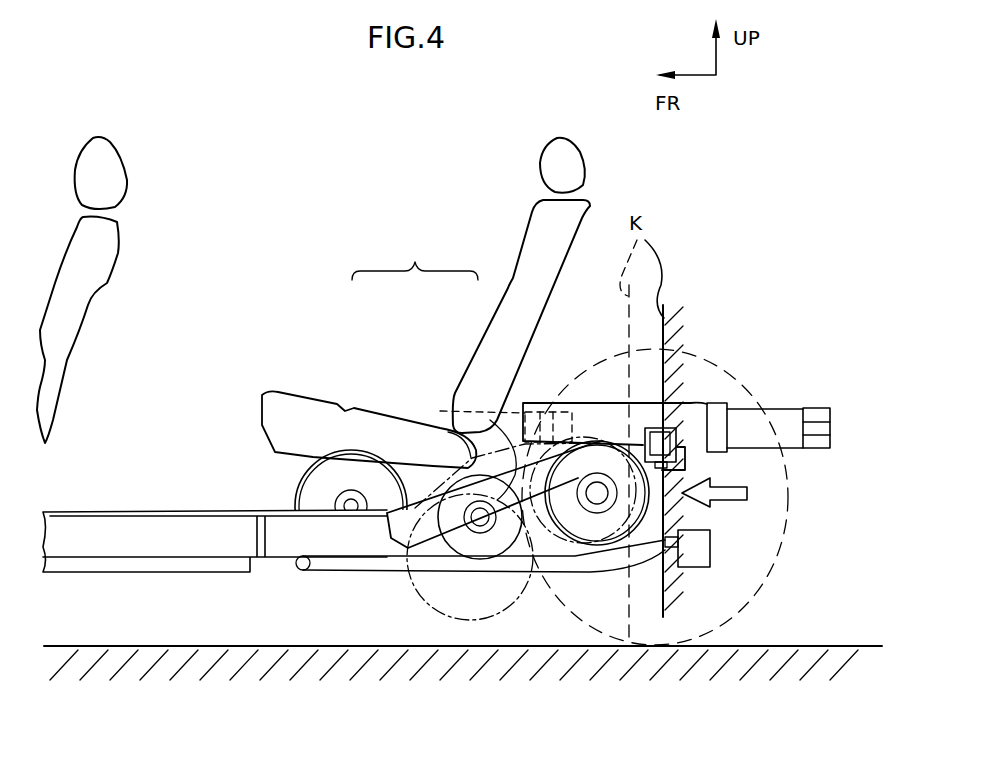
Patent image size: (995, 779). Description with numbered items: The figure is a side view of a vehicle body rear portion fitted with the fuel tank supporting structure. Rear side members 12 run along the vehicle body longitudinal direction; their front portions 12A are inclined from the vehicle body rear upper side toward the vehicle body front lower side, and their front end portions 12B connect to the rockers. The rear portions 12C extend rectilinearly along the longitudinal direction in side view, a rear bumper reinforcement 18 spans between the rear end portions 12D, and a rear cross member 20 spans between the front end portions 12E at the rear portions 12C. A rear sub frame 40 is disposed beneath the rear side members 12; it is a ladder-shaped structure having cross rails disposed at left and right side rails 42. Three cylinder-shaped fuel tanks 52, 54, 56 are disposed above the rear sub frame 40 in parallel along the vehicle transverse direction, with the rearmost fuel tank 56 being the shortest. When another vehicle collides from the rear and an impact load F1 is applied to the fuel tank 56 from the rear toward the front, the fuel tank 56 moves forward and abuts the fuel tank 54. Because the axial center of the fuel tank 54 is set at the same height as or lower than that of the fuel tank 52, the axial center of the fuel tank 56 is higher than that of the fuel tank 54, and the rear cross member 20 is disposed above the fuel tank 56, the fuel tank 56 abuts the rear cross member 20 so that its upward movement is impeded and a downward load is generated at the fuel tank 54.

The rear side member 12 is at (415, 258).
The front portion of rear side member 12A is at (441, 448).
The front end portion of rear side member 12B is at (397, 533).
The rear portion of rear side member 12C is at (598, 393).
The rear end portion of rear side member 12D is at (812, 430).
The front end portion of rear portion 12E is at (547, 410).
The rear bumper reinforcement 18 is at (830, 428).
The rear cross member 20 is at (452, 411).
The rear sub frame 40 is at (337, 573).
The side rail 42 is at (482, 565).
The fuel tank 52 is at (297, 495).
The fuel tank 54 is at (395, 535).
The fuel tank 56 is at (583, 540).
The impact load F1 is at (727, 502).